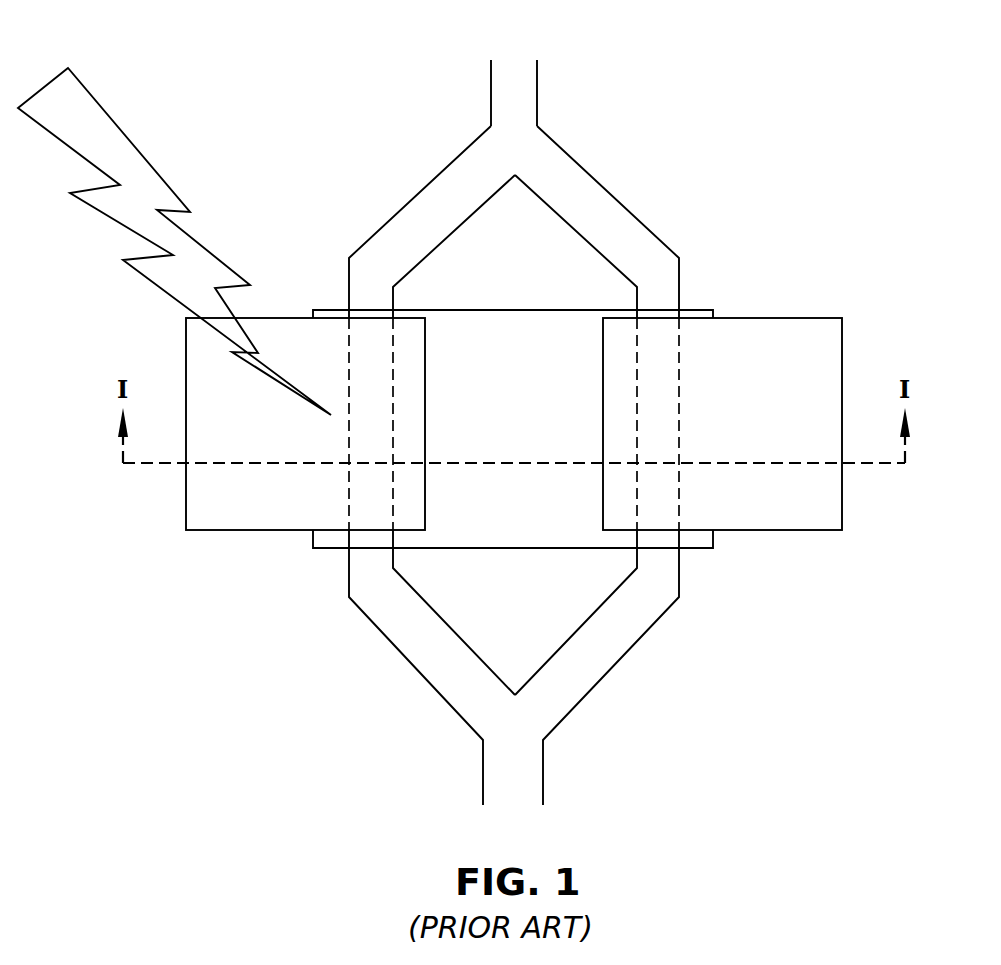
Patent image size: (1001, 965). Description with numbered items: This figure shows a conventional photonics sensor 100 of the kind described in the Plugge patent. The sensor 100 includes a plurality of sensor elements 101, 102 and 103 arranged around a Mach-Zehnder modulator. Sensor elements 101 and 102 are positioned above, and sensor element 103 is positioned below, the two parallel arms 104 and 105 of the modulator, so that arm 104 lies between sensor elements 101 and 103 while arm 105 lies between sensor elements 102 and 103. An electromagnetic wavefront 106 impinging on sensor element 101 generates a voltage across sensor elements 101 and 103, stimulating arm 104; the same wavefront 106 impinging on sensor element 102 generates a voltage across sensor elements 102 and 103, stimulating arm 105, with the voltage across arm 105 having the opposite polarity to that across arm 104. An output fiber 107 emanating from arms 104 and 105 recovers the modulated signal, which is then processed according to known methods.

The sensor 100 is at (214, 675).
The sensor element 101 is at (213, 522).
The sensor element 102 is at (810, 518).
The sensor element 103 is at (330, 545).
The arm 104 is at (427, 200).
The arm 105 is at (605, 207).
The electromagnetic wavefront 106 is at (93, 107).
The output fiber 107 is at (500, 87).